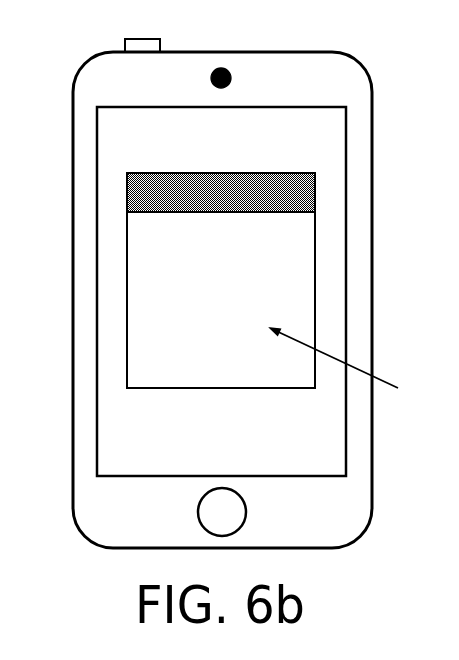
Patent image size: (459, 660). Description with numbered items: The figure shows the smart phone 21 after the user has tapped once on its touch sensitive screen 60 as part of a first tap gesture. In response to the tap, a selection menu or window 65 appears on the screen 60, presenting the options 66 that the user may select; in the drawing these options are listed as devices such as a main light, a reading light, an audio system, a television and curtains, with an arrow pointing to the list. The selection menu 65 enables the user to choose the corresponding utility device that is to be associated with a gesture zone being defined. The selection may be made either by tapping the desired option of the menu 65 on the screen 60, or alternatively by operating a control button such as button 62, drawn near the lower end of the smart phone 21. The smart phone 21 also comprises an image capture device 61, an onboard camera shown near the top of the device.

The smart phone 21 is at (372, 192).
The touch sensitive screen 60 is at (120, 147).
The image capture device 61 is at (231, 80).
The control button 62 is at (246, 512).
The selection menu 65 is at (142, 256).
The options 66 is at (349, 366).